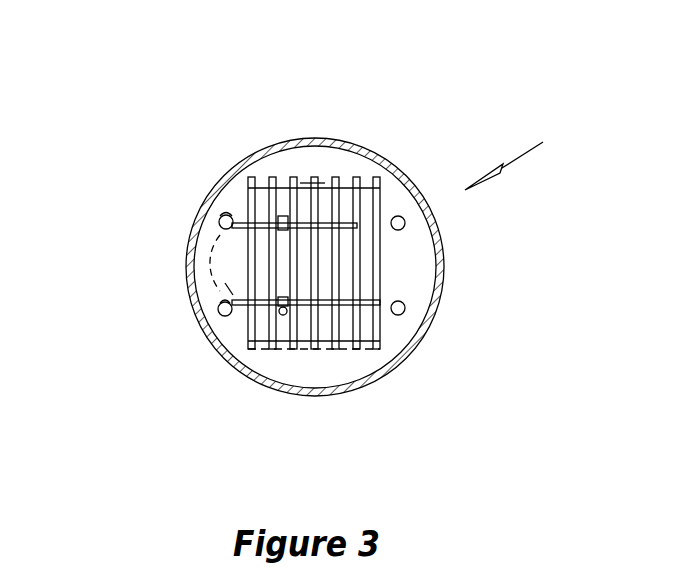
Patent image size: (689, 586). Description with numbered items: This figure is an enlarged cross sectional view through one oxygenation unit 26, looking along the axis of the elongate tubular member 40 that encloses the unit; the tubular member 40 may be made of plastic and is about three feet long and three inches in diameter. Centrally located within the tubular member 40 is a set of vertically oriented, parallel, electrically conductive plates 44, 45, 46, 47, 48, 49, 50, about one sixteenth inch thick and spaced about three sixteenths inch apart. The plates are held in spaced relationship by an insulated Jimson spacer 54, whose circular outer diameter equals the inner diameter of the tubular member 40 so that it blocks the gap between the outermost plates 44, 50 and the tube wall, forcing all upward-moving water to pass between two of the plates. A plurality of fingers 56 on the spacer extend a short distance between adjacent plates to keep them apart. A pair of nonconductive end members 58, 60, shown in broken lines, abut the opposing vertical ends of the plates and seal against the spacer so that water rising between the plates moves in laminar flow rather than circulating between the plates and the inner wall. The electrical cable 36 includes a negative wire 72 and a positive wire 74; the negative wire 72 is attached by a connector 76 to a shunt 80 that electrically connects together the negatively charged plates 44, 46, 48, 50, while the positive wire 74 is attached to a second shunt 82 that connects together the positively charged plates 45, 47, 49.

The oxygenation unit 26 is at (526, 152).
The electrical cable 36 is at (203, 253).
The tubular member 40 is at (443, 293).
The electrically conductive plate 44 is at (244, 193).
The electrically conductive plate 45 is at (265, 332).
The electrically conductive plate 46 is at (293, 332).
The electrically conductive plate 47 is at (339, 191).
The electrically conductive plate 48 is at (333, 355).
The electrically conductive plate 49 is at (360, 323).
The electrically conductive plate 50 is at (382, 208).
The upper Jimson spacer 54 is at (410, 263).
The fingers 56 is at (306, 182).
The nonconductive end member 58 is at (316, 172).
The nonconductive end member 60 is at (347, 357).
The negative wire 72 is at (216, 283).
The positive wire 74 is at (228, 218).
The connector 76 is at (278, 308).
The shunt 80 is at (365, 303).
The second shunt 82 is at (339, 216).